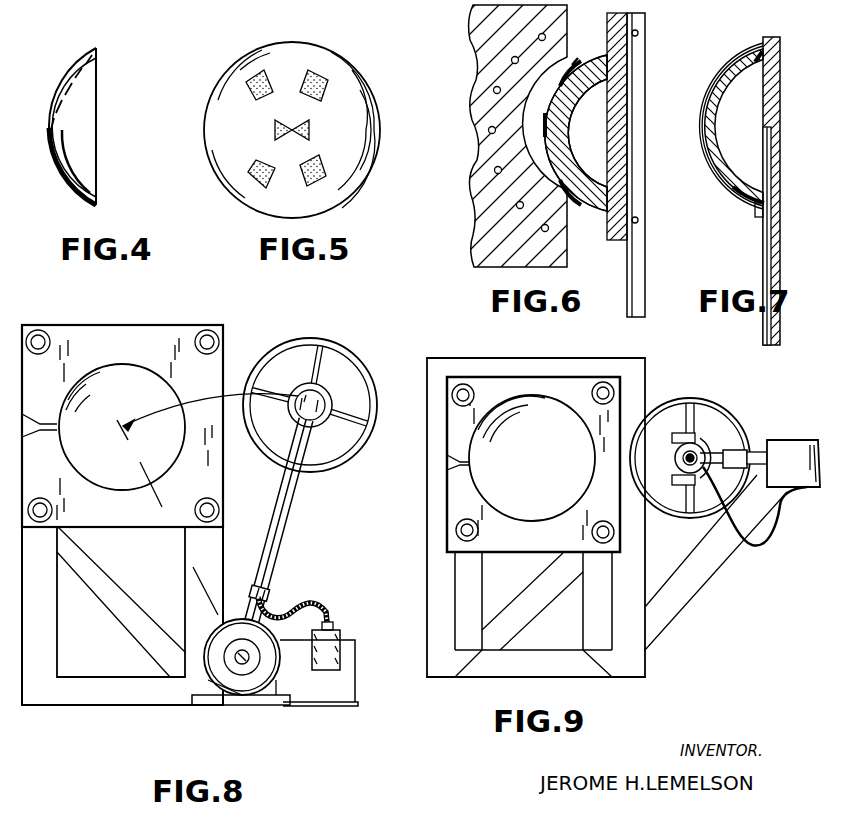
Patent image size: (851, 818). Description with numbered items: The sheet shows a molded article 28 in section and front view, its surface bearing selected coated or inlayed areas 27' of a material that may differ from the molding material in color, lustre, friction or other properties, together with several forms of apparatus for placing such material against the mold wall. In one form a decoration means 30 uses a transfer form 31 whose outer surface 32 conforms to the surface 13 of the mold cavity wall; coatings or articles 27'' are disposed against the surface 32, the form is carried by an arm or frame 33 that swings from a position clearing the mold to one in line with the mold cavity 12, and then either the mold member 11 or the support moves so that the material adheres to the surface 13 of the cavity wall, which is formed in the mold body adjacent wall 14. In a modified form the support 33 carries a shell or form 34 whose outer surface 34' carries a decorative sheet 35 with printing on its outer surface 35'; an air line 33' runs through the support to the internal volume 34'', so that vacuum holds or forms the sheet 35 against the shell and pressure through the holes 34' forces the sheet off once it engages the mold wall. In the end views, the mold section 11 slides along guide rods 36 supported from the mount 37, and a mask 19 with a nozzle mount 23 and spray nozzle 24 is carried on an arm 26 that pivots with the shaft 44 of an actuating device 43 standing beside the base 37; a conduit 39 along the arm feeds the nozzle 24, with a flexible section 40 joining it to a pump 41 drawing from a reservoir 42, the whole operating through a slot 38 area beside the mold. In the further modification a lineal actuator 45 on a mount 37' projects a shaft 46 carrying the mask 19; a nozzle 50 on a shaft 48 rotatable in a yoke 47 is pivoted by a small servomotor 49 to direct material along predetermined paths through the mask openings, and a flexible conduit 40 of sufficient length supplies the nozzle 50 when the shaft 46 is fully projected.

In FIG. 6, the mold member 11 is at (482, 57).
In FIG. 8, the mold member 11 is at (102, 333).
In FIG. 9, the mold member 11 is at (525, 395).
In FIG. 8, the mold cavity 12 is at (104, 483).
In FIG. 9, the mold cavity 12 is at (542, 481).
In FIG. 6, the mold cavity wall surface 13 is at (571, 57).
In FIG. 8, the mold cavity wall surface 13 is at (178, 435).
In FIG. 9, the mold cavity wall surface 13 is at (530, 437).
In FIG. 6, the housing wall 14 is at (567, 247).
In FIG. 8, the mold mask 19 is at (284, 345).
In FIG. 9, the mold mask 19 is at (703, 400).
In FIG. 8, the mount for spray nozzle 23 is at (326, 362).
In FIG. 8, the spray nozzle 24 is at (318, 400).
In FIG. 9, the spray nozzle 24 is at (683, 462).
In FIG. 8, the arm 26 is at (290, 514).
In FIG. 4, the coated areas 27' is at (55, 128).
In FIG. 5, the coated areas 27' is at (326, 121).
In FIG. 6, the coatings or articles 27'' is at (505, 133).
In FIG. 4, the molded article 28 is at (95, 50).
In FIG. 5, the molded article 28 is at (227, 72).
In FIG. 6, the decoration means 30 is at (640, 30).
In FIG. 6, the transfer form 31 is at (570, 88).
In FIG. 6, the outer surface of form 32 is at (548, 125).
In FIG. 6, the arm or frame 33 is at (652, 165).
In FIG. 7, the arm or frame 33 is at (790, 236).
In FIG. 7, the air line 33' is at (795, 191).
In FIG. 7, the form or shell 34 is at (716, 133).
In FIG. 7, the outer surface of form / holes 34' is at (711, 87).
In FIG. 7, the internal volume 34'' is at (725, 215).
In FIG. 7, the decorative sheet 35 is at (729, 124).
In FIG. 7, the outer surface of sheet 35' is at (685, 167).
In FIG. 8, the guide rods 36 is at (38, 330).
In FIG. 9, the guide rods 36 is at (533, 462).
In FIG. 8, the mount / mold base 37 is at (122, 635).
In FIG. 9, the mount 37' is at (593, 598).
In FIG. 8, the slot 38 is at (39, 425).
In FIG. 9, the slot 38 is at (447, 462).
In FIG. 8, the conduit 39 is at (272, 553).
In FIG. 8, the flexible conduit section 40 is at (305, 598).
In FIG. 9, the flexible conduit section 40 is at (750, 542).
In FIG. 8, the pump 41 is at (326, 640).
In FIG. 8, the reservoir 42 is at (341, 666).
In FIG. 8, the actuating device 43 is at (222, 676).
In FIG. 8, the shaft 44 is at (240, 663).
In FIG. 9, the lineal actuator 45 is at (780, 446).
In FIG. 9, the shaft 46 is at (757, 453).
In FIG. 9, the yoke 47 is at (681, 431).
In FIG. 9, the shaft 48 is at (668, 425).
In FIG. 9, the servomotor 49 is at (736, 450).
In FIG. 9, the dispensing nozzle 50 is at (702, 454).